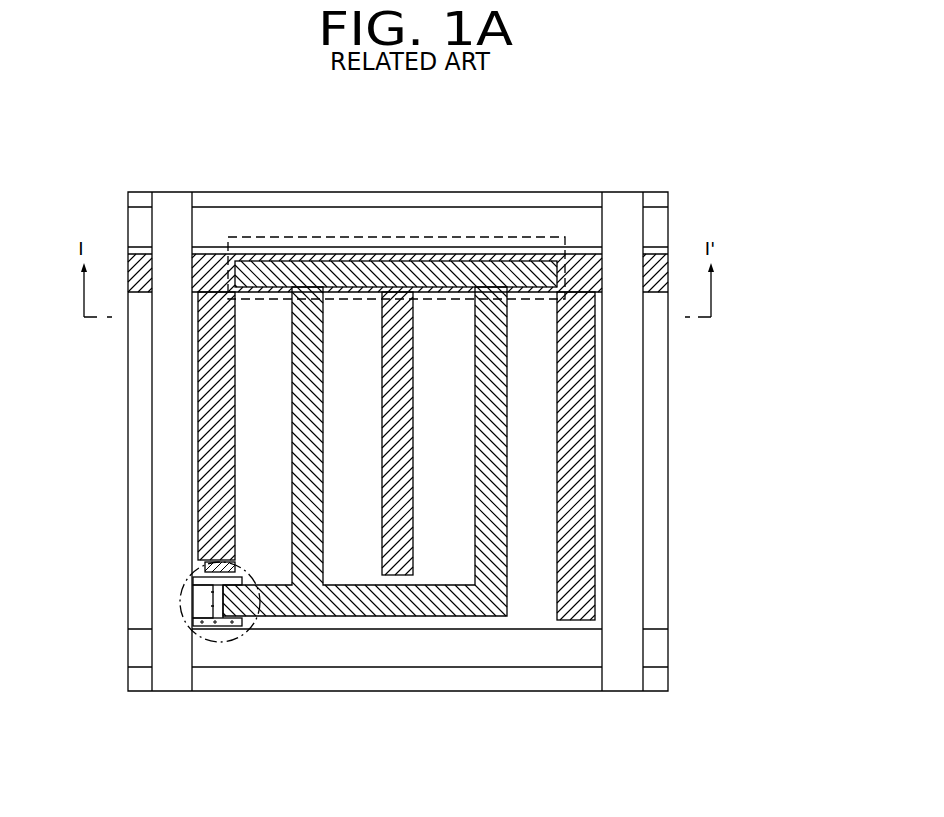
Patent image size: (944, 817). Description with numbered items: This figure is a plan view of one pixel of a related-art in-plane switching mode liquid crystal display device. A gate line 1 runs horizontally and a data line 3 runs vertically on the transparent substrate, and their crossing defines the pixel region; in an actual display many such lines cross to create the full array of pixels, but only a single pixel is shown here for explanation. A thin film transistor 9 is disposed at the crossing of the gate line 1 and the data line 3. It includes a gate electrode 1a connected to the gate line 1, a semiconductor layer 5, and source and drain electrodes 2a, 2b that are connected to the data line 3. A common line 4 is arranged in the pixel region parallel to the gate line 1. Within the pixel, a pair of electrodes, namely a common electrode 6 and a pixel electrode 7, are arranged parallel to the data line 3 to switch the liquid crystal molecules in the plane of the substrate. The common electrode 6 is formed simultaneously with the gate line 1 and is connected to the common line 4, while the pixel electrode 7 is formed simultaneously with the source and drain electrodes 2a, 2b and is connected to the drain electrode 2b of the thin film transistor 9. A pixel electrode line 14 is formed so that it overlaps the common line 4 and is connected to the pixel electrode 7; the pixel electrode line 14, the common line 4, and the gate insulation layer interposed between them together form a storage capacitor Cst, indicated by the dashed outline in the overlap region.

The gate line 1 is at (473, 650).
The gate electrode 1a is at (197, 558).
The source electrode 2a is at (193, 592).
The drain electrode 2b is at (240, 626).
The data line 3 is at (168, 677).
The common line 4 is at (143, 233).
The semiconductor layer 5 is at (217, 626).
The common electrode 6 is at (222, 320).
The pixel electrode 7 is at (305, 312).
The thin film transistor 9 is at (183, 623).
The pixel electrode line 14 is at (538, 273).
The storage capacitor Cst is at (440, 237).